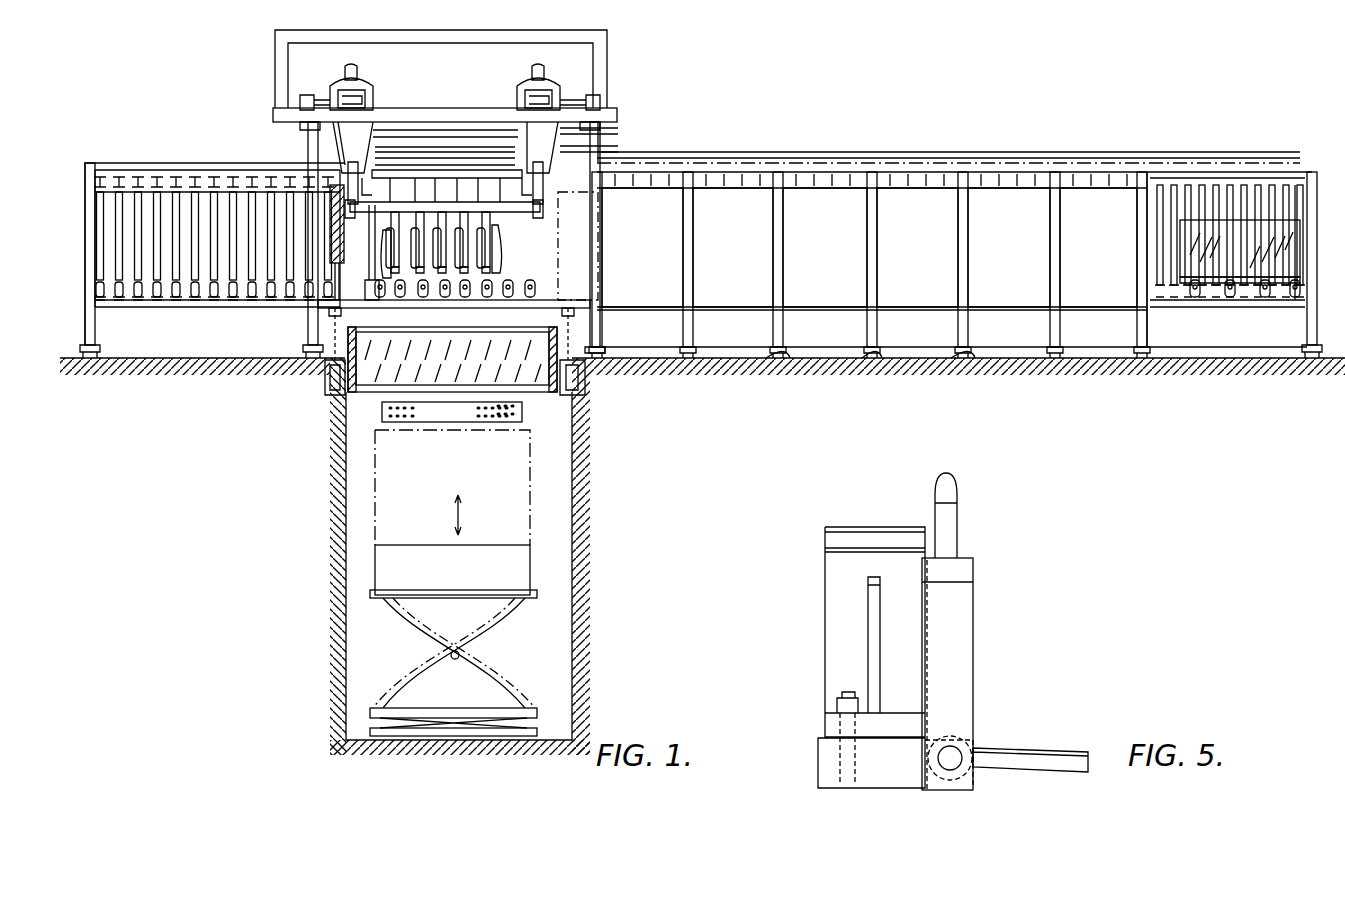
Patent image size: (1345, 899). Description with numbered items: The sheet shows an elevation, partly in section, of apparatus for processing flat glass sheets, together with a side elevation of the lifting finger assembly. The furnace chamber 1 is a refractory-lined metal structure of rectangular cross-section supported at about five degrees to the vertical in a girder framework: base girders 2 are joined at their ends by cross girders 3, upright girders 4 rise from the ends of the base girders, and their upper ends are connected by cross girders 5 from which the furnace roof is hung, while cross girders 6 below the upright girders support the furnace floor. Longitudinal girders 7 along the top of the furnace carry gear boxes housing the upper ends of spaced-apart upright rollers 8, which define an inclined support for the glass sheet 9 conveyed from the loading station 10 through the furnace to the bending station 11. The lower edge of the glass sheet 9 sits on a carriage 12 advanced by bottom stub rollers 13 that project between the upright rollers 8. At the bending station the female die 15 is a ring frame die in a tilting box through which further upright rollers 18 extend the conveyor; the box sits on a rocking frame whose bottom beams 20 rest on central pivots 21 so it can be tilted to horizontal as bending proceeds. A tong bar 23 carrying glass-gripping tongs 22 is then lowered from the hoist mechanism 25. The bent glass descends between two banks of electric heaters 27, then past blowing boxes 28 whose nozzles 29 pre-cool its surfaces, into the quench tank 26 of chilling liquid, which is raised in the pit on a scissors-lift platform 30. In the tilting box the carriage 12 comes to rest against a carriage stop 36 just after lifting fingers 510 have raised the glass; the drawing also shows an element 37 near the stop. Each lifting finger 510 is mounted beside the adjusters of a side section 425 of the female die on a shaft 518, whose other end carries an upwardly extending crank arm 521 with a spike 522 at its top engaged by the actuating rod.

In FIG. 1, the furnace chamber 1 is at (908, 140).
In FIG. 1, the base girders 2 is at (780, 358).
In FIG. 1, the cross girders 3 is at (910, 355).
In FIG. 1, the upright girders 4 is at (968, 332).
In FIG. 1, the cross girders 5 is at (780, 178).
In FIG. 1, the cross girders 6 is at (690, 312).
In FIG. 1, the longitudinal girders 7 is at (660, 168).
In FIG. 1, the upright rollers 8 is at (172, 215).
In FIG. 1, the glass sheet 9 is at (1262, 300).
In FIG. 1, the loading station 10 is at (1207, 146).
In FIG. 1, the bending station 11 is at (610, 90).
In FIG. 1, the carriage 12 is at (1298, 300).
In FIG. 1, the bottom stub rollers 13 is at (218, 292).
In FIG. 1, the female die 15 is at (512, 228).
In FIG. 1, the upright rollers 18 is at (430, 230).
In FIG. 1, the bottom beams 20 is at (566, 343).
In FIG. 1, the central pivots 21 is at (583, 378).
In FIG. 1, the glass-gripping tongs 22 is at (560, 222).
In FIG. 1, the tong bar 23 is at (348, 196).
In FIG. 1, the hoist mechanism 25 is at (379, 93).
In FIG. 1, the quench tank 26 is at (535, 577).
In FIG. 1, the electric heaters 27 is at (385, 420).
In FIG. 1, the blowing boxes 28 is at (385, 432).
In FIG. 1, the nozzles 29 is at (510, 422).
In FIG. 1, the scissors-lift platform 30 is at (538, 713).
In FIG. 1, the carriage stop 36 is at (372, 282).
In FIG. 1, the guide column 37 is at (337, 273).
In FIG. 1, the side section 425 is at (520, 255).
In FIG. 5, the lifting finger 510 is at (1040, 756).
In FIG. 5, the shaft 518 is at (948, 766).
In FIG. 5, the crank arm 521 is at (955, 622).
In FIG. 5, the spike 522 is at (945, 493).